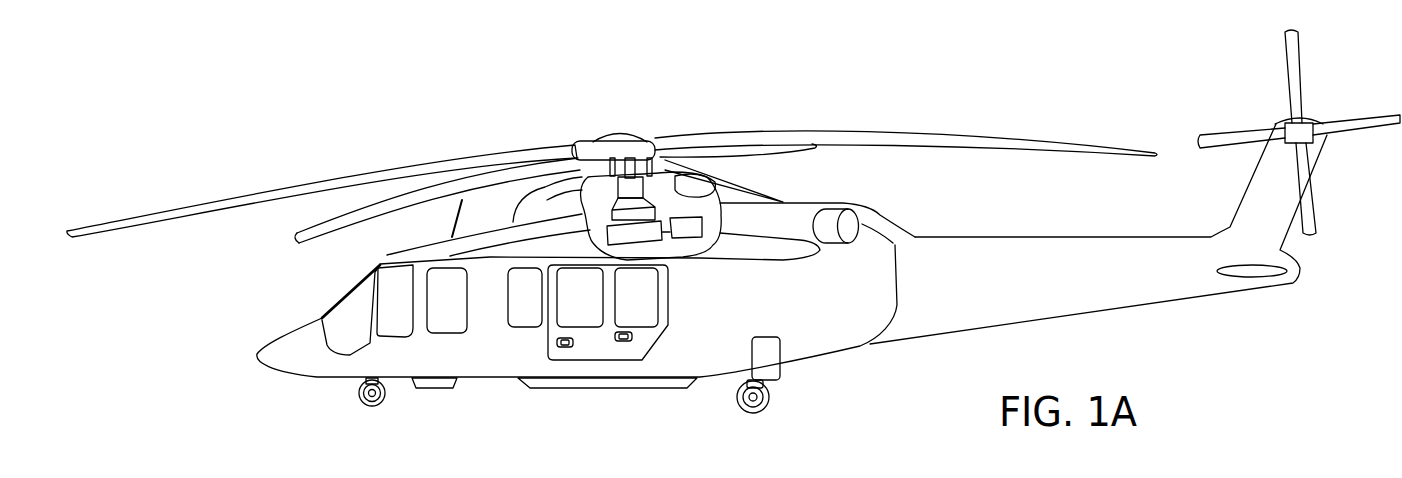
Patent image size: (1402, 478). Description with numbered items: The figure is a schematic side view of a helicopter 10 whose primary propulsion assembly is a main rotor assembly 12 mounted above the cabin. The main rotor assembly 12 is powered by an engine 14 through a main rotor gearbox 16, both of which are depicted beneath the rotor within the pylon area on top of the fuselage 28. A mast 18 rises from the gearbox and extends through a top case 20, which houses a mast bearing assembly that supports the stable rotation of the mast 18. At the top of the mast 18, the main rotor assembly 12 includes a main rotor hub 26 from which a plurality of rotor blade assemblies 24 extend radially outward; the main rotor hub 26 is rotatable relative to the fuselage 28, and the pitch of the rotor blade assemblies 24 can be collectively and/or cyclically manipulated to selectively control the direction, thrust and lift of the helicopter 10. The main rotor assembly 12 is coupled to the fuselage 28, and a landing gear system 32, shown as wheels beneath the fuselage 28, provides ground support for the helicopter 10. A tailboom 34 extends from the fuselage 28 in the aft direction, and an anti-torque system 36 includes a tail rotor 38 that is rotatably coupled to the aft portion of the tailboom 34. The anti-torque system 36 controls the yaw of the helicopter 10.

The helicopter 10 is at (408, 128).
The main rotor assembly 12 is at (601, 128).
The engine 14 is at (688, 240).
The main rotor gearbox 16 is at (645, 237).
The mast 18 is at (630, 168).
The top case 20 is at (540, 196).
The rotor blade assemblies 24 is at (183, 200).
The main rotor hub 26 is at (627, 130).
The fuselage 28 is at (822, 366).
The landing gear system 32 is at (738, 400).
The tailboom 34 is at (1083, 237).
The anti-torque system 36 is at (1324, 108).
The tail rotor 38 is at (1288, 147).